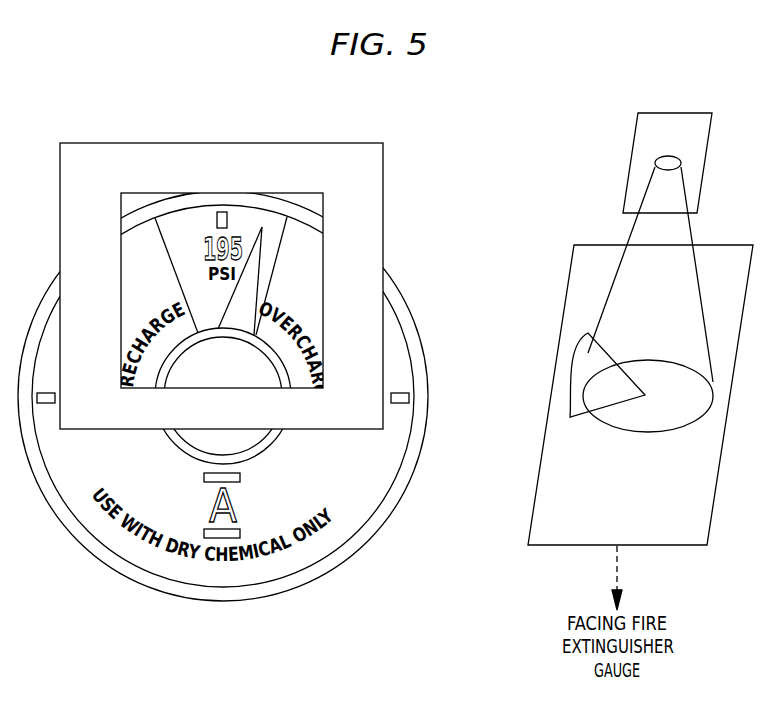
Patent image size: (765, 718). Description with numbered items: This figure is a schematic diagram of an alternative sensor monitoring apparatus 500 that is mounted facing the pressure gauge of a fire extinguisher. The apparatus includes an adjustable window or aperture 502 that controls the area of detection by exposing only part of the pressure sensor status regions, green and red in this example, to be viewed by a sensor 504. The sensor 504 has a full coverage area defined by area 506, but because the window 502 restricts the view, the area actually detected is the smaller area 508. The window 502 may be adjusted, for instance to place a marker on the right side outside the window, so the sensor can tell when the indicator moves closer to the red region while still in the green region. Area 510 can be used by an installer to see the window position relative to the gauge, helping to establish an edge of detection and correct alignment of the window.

The fire extinguisher gauge / gauge housing 500 is at (98, 176).
The adjustable window 502 is at (325, 206).
The sensor 504 is at (687, 142).
The coverage area 506 is at (697, 410).
The detected area 508 is at (603, 397).
The area 510 is at (228, 218).